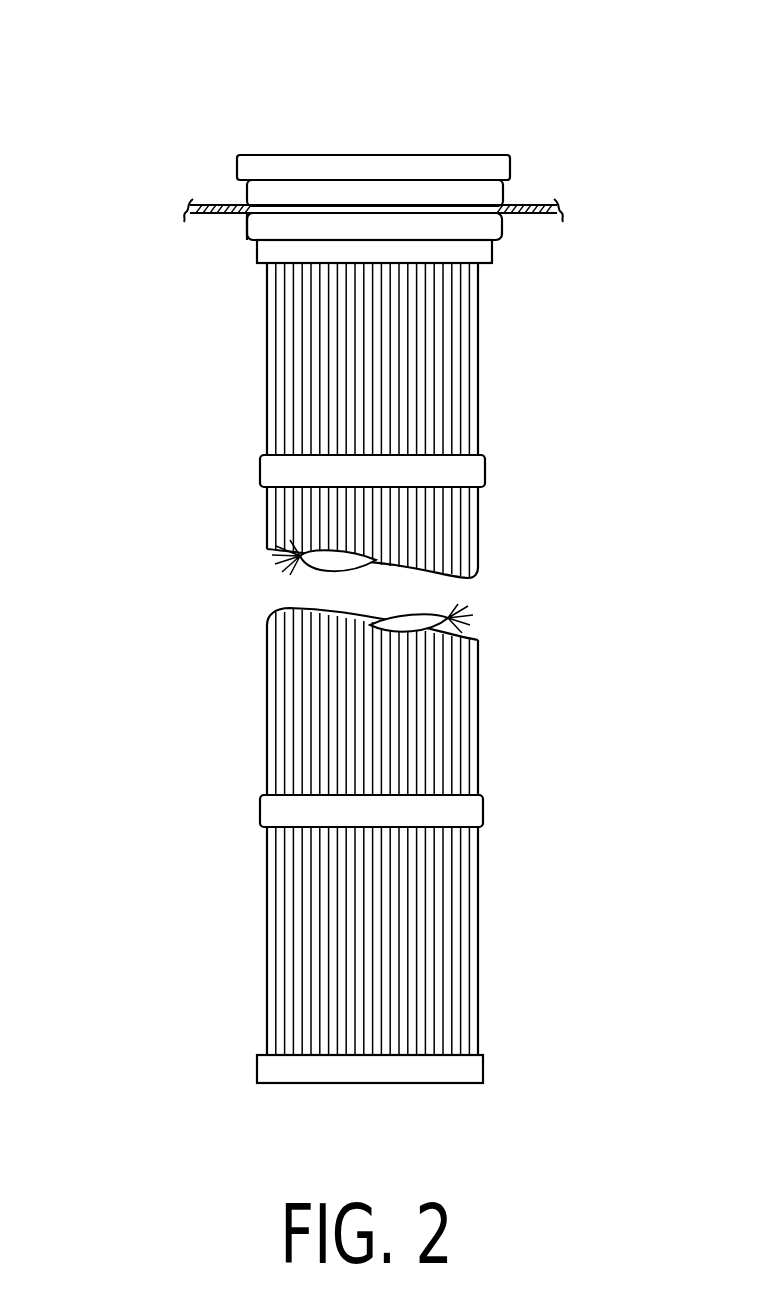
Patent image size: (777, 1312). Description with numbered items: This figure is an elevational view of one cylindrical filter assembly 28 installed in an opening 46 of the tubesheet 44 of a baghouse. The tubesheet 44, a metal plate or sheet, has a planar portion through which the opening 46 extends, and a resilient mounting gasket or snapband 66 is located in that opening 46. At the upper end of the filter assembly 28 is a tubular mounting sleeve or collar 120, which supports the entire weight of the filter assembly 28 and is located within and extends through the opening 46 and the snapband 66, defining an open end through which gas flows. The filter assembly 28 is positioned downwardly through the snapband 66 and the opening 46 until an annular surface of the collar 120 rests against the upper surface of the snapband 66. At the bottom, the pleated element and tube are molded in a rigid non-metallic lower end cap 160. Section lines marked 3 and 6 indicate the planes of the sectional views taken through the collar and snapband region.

The filter assembly 28 is at (527, 668).
The tubular mounting sleeve or collar 120 is at (237, 163).
The tubesheet 44 is at (525, 205).
The opening 46 is at (495, 214).
The snapband 66 is at (243, 220).
The lower end cap 160 is at (490, 1068).
The section line 3- 3 is at (440, 387).
The section line 6- 6 is at (555, 70).